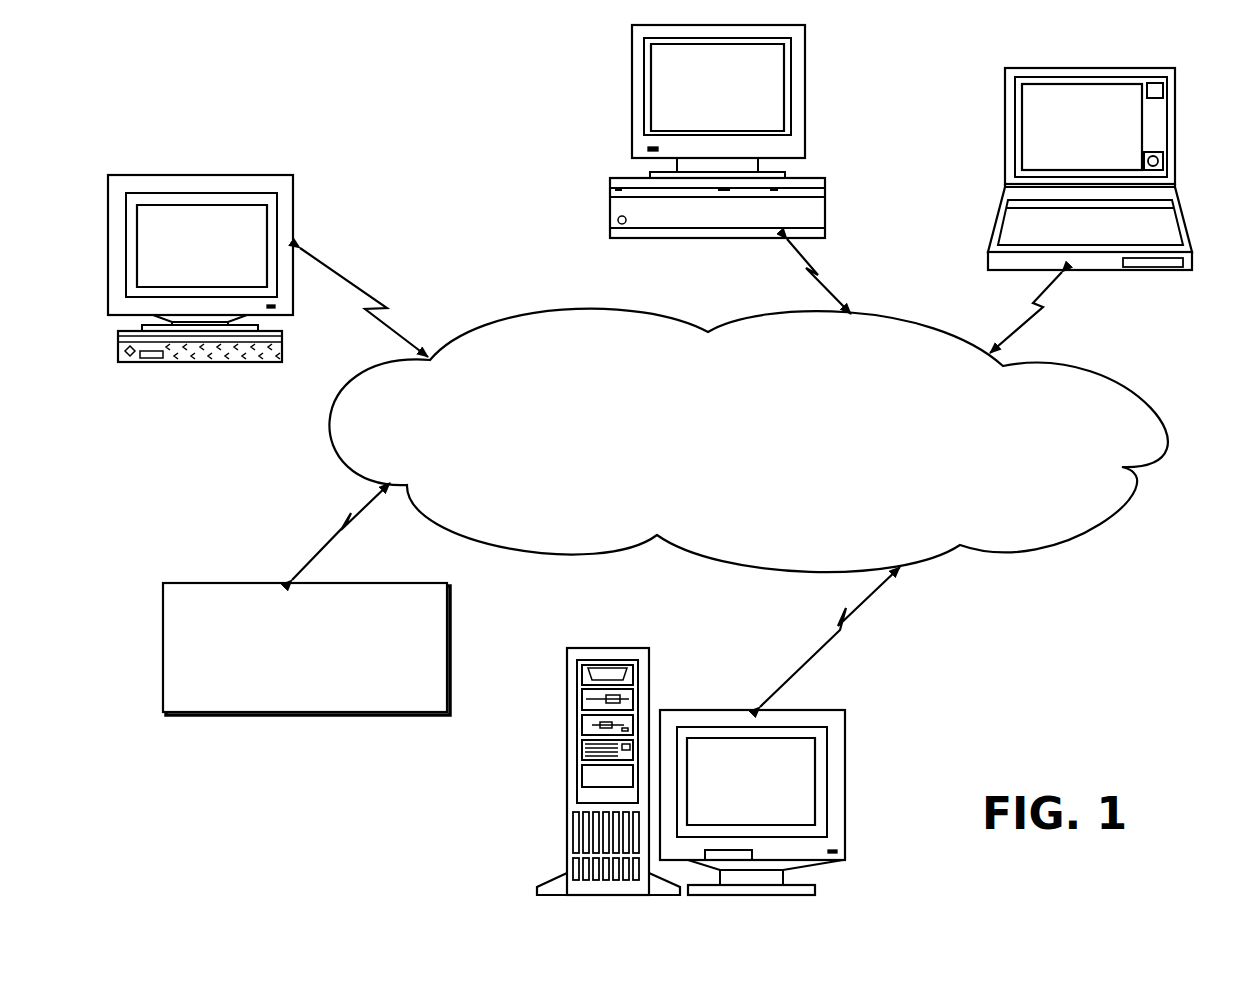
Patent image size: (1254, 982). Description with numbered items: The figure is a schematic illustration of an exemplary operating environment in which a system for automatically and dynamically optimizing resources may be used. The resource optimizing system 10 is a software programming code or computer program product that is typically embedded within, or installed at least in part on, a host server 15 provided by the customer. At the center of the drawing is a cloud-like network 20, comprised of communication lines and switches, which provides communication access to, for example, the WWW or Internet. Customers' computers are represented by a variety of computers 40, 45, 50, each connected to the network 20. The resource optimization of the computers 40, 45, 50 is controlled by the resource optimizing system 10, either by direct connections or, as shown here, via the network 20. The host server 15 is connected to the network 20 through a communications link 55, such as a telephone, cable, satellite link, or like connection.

The resource optimizing system 10 is at (162, 624).
The host server 15 is at (567, 692).
The network 20 is at (578, 312).
The computer 40 is at (298, 230).
The computer 45 is at (805, 119).
The computer 50 is at (1185, 218).
The communications link 55 is at (823, 628).